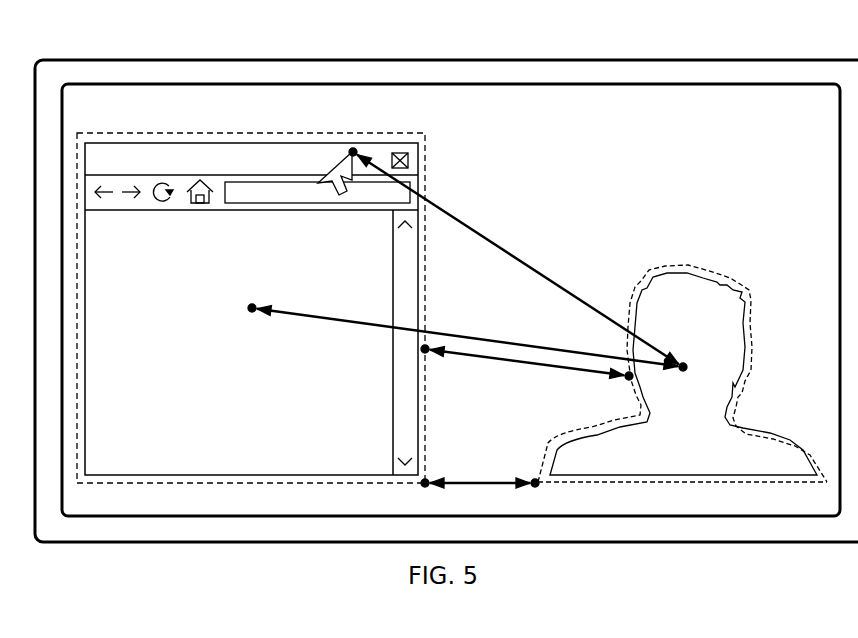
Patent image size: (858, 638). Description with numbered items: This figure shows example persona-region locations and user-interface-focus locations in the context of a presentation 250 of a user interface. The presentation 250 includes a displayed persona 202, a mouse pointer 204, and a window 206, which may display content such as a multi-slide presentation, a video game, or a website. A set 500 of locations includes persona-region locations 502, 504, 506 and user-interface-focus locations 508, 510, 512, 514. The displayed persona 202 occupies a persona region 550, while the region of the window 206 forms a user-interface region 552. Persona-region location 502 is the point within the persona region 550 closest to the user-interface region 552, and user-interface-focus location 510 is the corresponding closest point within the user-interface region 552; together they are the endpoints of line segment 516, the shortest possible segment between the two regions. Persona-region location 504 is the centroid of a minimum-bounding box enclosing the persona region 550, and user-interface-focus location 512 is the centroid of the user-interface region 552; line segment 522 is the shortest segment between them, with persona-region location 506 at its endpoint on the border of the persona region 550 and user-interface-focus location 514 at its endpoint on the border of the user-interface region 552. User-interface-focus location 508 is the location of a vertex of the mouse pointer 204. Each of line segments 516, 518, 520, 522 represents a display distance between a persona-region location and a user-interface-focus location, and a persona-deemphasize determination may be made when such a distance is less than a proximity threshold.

The presentation 250 is at (68, 58).
The set of locations 500 is at (656, 153).
The user-interface region 552 is at (118, 134).
The window 206 is at (185, 142).
The mouse pointer 204 is at (330, 200).
The user-interface-focus location 508 is at (349, 150).
The user-interface-focus location 512 is at (249, 310).
The user-interface-focus location 514 is at (428, 354).
The user-interface-focus location 510 is at (423, 487).
The persona-region location 502 is at (538, 487).
The persona-region location 504 is at (687, 369).
The persona-region location 506 is at (627, 380).
The line segment 518 is at (517, 258).
The line segment 520 is at (485, 337).
The line segment 522 is at (550, 368).
The line segment 516 is at (476, 478).
The displayed persona 202 is at (743, 384).
The persona region 550 is at (750, 348).